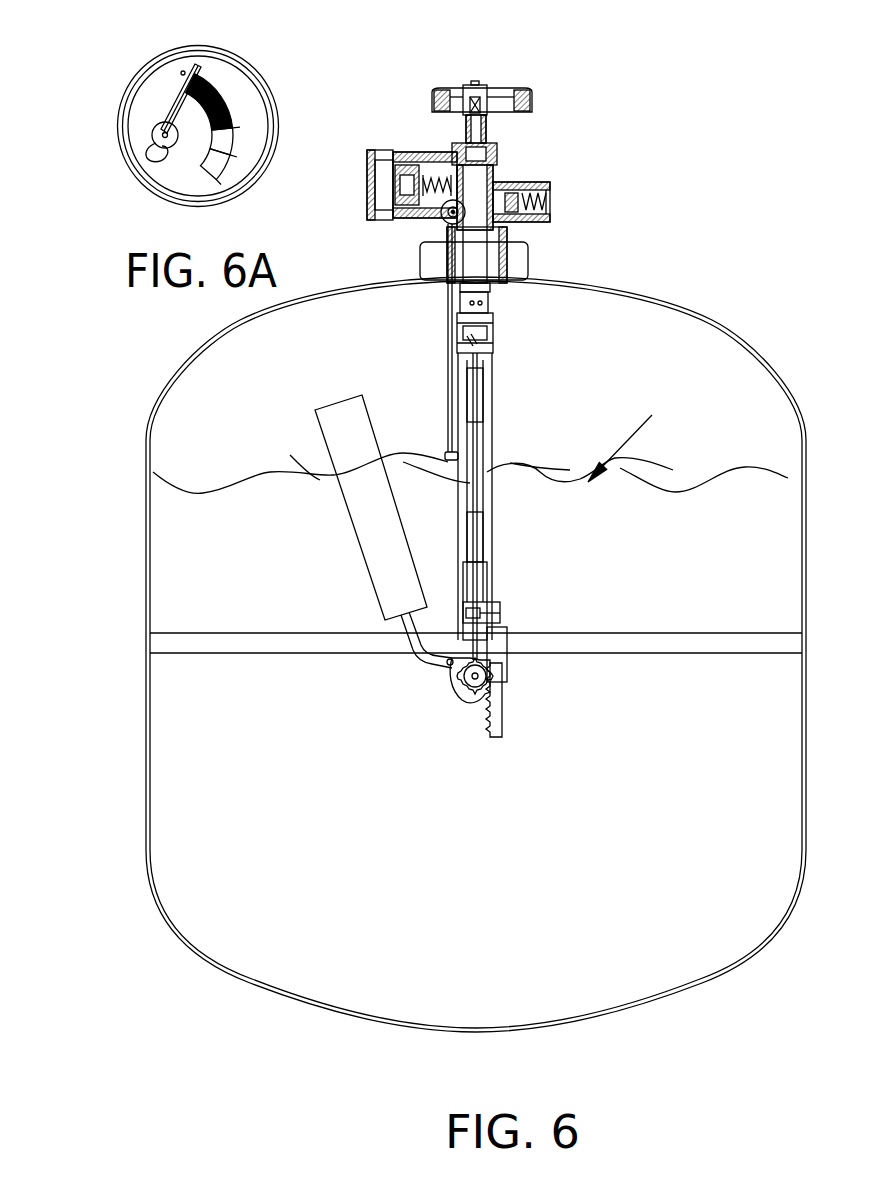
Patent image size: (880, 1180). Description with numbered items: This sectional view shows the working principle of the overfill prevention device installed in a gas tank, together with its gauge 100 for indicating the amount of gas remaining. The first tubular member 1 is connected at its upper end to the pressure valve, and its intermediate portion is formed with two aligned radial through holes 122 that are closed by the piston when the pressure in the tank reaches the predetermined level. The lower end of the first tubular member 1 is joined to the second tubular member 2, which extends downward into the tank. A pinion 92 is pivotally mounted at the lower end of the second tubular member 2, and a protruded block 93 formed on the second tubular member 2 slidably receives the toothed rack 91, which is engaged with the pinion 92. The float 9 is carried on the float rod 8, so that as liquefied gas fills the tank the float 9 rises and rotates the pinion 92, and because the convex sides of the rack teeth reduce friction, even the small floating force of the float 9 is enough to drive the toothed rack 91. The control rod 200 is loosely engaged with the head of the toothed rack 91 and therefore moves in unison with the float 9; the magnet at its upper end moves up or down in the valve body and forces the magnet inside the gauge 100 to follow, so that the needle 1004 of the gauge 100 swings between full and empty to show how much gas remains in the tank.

In FIG. 6A, the gauge 100 is at (277, 127).
In FIG. 6A, the needle 1004 is at (176, 110).
In FIG. 6, the first tubular member 1 is at (463, 303).
In FIG. 6, the radial through holes 122 is at (482, 303).
In FIG. 6, the second tubular member 2 is at (467, 342).
In FIG. 6, the control rod 200 is at (477, 550).
In FIG. 6, the float 9 is at (335, 433).
In FIG. 6, the float rod 8 is at (412, 642).
In FIG. 6, the protruded block 93 is at (503, 668).
In FIG. 6, the pinion 92 is at (473, 685).
In FIG. 6, the toothed rack 91 is at (502, 723).